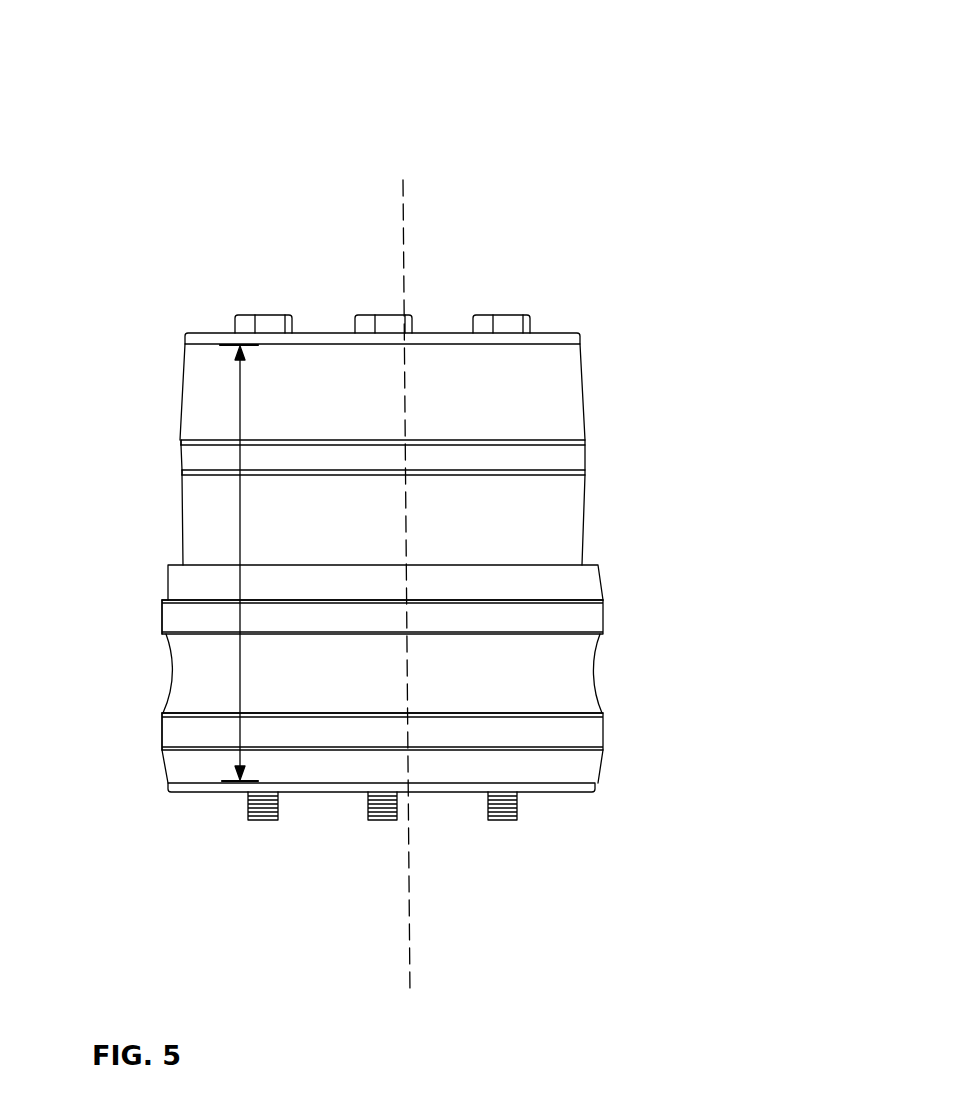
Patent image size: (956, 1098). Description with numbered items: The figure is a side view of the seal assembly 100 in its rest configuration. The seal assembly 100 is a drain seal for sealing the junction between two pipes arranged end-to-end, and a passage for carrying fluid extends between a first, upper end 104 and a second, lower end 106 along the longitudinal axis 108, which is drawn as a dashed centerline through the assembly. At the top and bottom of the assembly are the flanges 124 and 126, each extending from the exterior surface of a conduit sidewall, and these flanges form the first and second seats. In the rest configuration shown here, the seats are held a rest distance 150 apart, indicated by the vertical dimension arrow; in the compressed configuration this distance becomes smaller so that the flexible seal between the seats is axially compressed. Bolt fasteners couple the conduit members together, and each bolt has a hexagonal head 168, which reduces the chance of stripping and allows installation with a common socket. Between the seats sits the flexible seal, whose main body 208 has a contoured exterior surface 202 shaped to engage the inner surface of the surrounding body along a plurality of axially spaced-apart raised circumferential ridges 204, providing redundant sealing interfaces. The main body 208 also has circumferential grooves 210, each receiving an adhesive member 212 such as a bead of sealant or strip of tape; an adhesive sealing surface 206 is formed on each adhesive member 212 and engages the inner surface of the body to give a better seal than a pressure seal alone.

The seal assembly 100 is at (673, 65).
The first end 104 is at (222, 189).
The second end 106 is at (524, 994).
The longitudinal axis 108 is at (403, 268).
The flange 124 is at (583, 339).
The flange 126 is at (595, 788).
The rest distance 150 is at (240, 420).
The hexagonal head 168 is at (358, 317).
The contoured exterior surface 202 is at (403, 536).
The raised circumferential ridges 204 is at (622, 697).
The adhesive sealing surface 206 is at (580, 728).
The main body 208 is at (193, 400).
The circumferential groove 210 is at (540, 715).
The adhesive member 212 is at (160, 733).